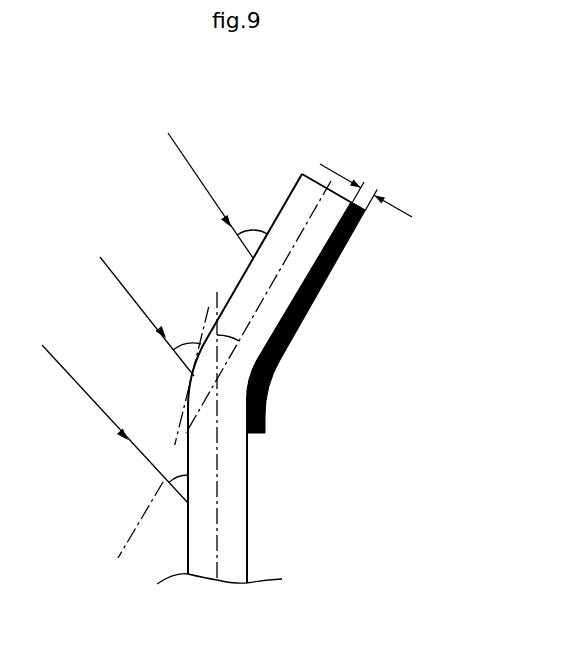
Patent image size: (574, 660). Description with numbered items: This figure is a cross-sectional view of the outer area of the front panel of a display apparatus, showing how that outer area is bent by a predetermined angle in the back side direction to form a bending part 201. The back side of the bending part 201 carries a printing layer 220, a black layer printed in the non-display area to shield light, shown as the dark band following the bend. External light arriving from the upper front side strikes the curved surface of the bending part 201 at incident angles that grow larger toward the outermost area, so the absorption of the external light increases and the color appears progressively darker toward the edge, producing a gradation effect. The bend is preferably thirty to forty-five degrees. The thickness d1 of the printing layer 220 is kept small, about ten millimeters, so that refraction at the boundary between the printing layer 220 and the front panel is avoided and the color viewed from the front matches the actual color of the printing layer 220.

The bending part 201 is at (271, 152).
The printing layer 220 is at (314, 296).
The thickness of the printing layer d1 is at (366, 189).